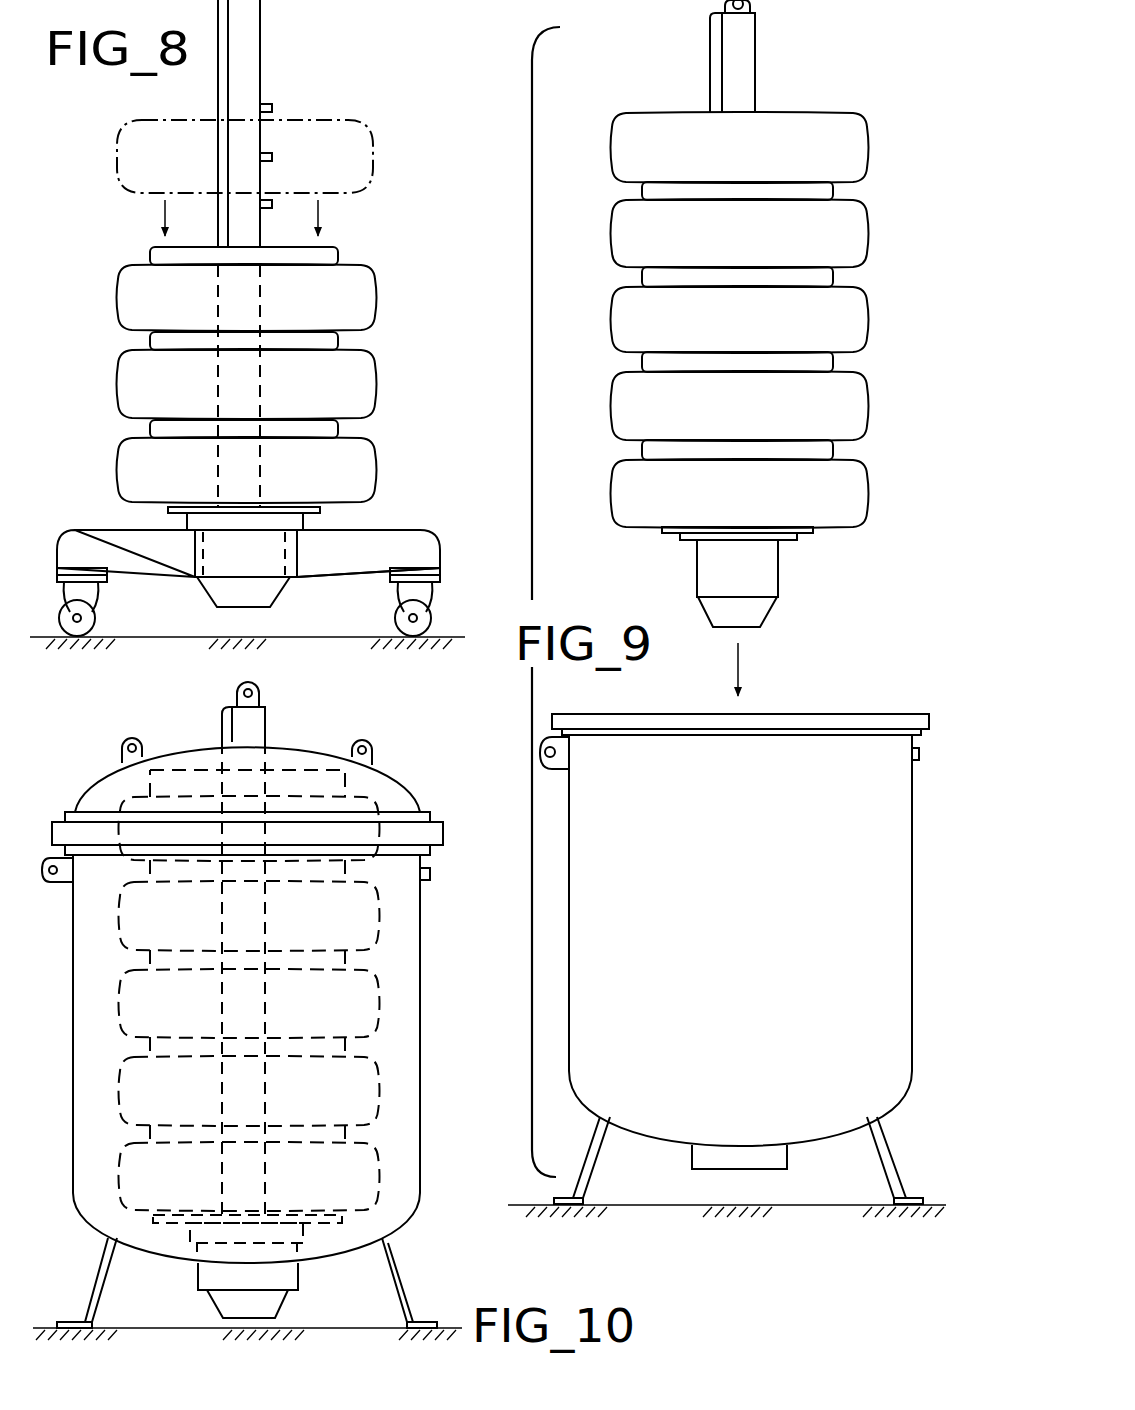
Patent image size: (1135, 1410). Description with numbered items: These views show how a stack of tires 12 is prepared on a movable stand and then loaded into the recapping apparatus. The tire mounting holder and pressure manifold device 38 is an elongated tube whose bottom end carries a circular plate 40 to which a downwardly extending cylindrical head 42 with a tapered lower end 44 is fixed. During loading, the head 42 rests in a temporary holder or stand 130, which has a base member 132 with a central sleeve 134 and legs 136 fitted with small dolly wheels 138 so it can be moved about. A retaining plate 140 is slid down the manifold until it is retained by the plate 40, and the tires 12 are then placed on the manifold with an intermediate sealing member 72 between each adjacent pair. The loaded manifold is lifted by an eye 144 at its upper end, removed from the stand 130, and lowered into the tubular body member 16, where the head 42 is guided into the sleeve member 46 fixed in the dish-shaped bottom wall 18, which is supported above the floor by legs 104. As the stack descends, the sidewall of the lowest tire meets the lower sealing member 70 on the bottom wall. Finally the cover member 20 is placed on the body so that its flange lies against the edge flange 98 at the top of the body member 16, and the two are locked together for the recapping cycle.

In FIG. 8, the tires 12 is at (376, 310).
In FIG. 9, the tires 12 is at (866, 257).
In FIG. 9, the tubular body member 16 is at (714, 948).
In FIG. 10, the tubular body member 16 is at (422, 935).
In FIG. 10, the bottom wall 18 is at (357, 1252).
In FIG. 10, the cover member 20 is at (392, 775).
In FIG. 8, the tire mounting holder and pressure manifold device 38 is at (250, 38).
In FIG. 9, the tire mounting holder and pressure manifold device 38 is at (743, 47).
In FIG. 10, the tire mounting holder and pressure manifold device 38 is at (253, 727).
In FIG. 9, the circular plate 40 is at (792, 540).
In FIG. 8, the cylindrical head 42 is at (265, 587).
In FIG. 9, the cylindrical head 42 is at (745, 585).
In FIG. 9, the tapered lower end 44 is at (767, 612).
In FIG. 10, the tapered lower end 44 is at (230, 1305).
In FIG. 9, the sleeve member 46 is at (787, 1152).
In FIG. 10, the lower sealing member 70 is at (345, 1215).
In FIG. 8, the intermediate sealing member 72 is at (340, 257).
In FIG. 9, the edge flange 98 is at (562, 716).
In FIG. 9, the supporting legs 104 is at (886, 1145).
In FIG. 8, the temporary holder or stand 130 is at (430, 533).
In FIG. 8, the base member 132 is at (177, 523).
In FIG. 8, the central sleeve 134 is at (193, 557).
In FIG. 8, the legs 136 is at (345, 558).
In FIG. 8, the dolly wheels 138 is at (432, 623).
In FIG. 8, the retaining plate 140 is at (323, 517).
In FIG. 9, the retaining plate 140 is at (798, 537).
In FIG. 10, the eye 144 is at (259, 693).